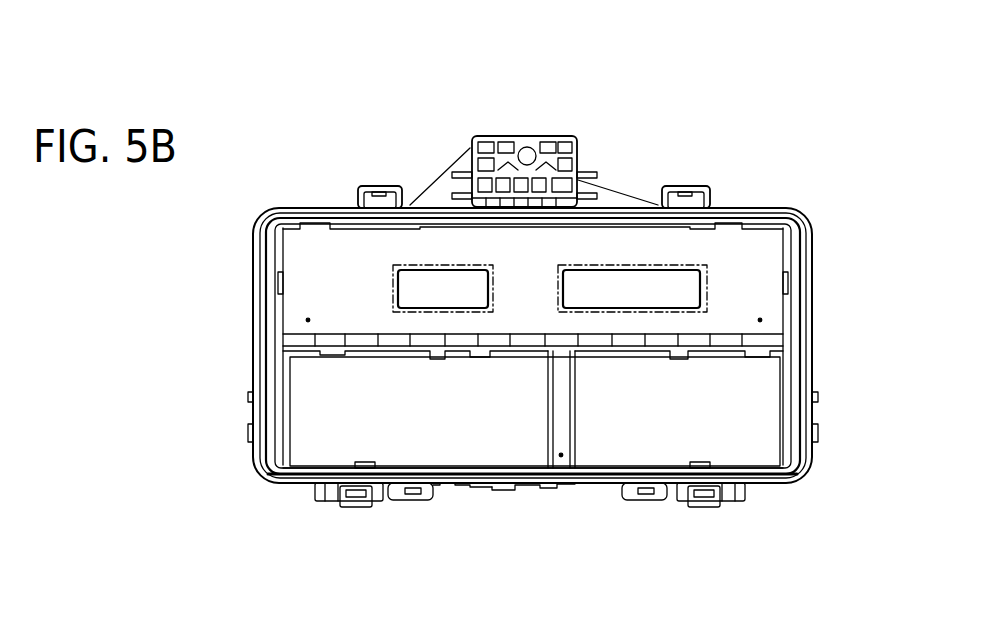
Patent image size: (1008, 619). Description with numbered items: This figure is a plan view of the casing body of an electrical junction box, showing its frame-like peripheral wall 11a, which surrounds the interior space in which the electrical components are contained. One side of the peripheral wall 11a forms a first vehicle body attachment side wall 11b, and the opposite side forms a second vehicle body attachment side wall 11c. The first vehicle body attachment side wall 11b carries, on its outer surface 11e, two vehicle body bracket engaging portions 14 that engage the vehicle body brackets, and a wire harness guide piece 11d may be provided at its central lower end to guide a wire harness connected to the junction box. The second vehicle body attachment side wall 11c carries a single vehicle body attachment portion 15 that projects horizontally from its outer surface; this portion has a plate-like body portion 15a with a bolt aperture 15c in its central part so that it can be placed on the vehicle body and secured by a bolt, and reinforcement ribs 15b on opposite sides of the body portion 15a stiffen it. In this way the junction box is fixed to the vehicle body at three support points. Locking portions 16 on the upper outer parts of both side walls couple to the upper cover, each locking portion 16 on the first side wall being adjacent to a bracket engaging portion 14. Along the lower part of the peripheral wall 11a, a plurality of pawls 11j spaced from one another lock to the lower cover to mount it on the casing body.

The peripheral wall 11a is at (793, 258).
The first vehicle body attachment side wall 11b is at (585, 486).
The second vehicle body attachment side wall 11c is at (630, 208).
The wire harness guide piece 11d is at (528, 490).
The outer surface 11e is at (462, 488).
The pawls 11j is at (440, 487).
The vehicle body bracket engaging portion 14 is at (320, 502).
The vehicle body attachment portion 15 is at (506, 134).
The body portion 15a is at (575, 205).
The reinforcement ribs 15b is at (440, 200).
The bolt aperture 15c is at (527, 150).
The locking portions 16 is at (378, 187).